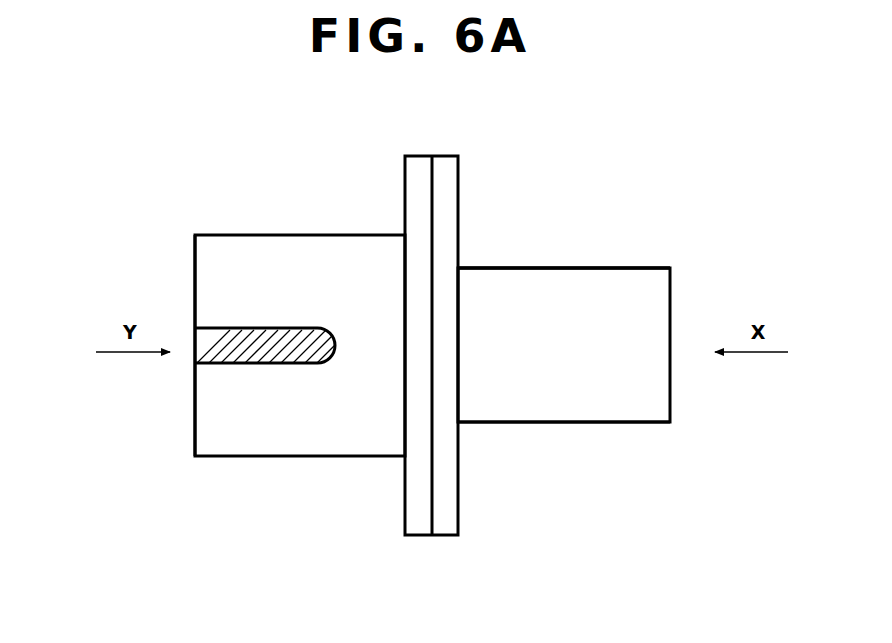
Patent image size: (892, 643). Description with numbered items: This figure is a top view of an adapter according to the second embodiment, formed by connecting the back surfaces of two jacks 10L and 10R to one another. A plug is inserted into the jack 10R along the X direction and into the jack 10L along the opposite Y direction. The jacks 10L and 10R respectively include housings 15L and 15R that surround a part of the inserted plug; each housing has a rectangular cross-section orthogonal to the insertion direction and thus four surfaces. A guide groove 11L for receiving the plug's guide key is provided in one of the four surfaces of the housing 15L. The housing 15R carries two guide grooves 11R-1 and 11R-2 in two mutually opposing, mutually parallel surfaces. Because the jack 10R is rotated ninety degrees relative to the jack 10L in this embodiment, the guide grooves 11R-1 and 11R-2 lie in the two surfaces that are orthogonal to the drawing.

The jack 10L is at (267, 208).
The housing 15L is at (195, 280).
The guide groove 11L is at (298, 328).
The jack 10R is at (572, 237).
The housing 15R is at (552, 268).
The guide groove 11R-2 is at (650, 266).
The guide groove 11R-1 is at (623, 424).